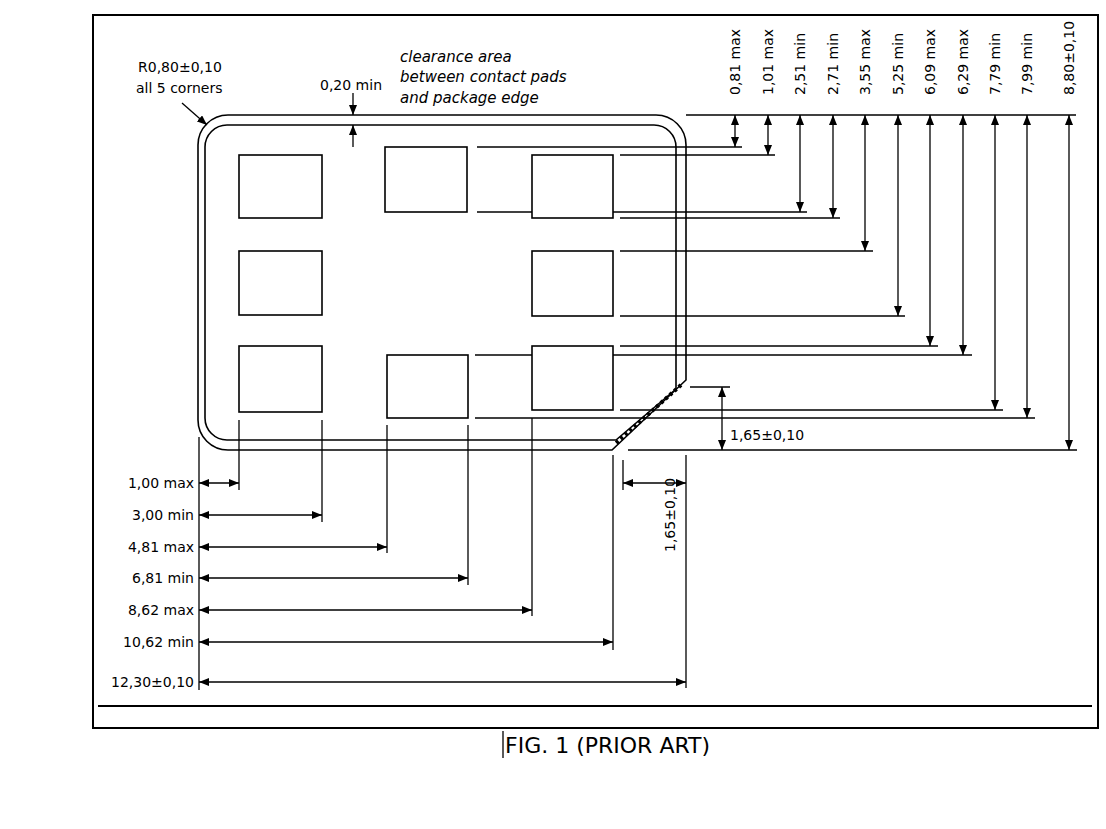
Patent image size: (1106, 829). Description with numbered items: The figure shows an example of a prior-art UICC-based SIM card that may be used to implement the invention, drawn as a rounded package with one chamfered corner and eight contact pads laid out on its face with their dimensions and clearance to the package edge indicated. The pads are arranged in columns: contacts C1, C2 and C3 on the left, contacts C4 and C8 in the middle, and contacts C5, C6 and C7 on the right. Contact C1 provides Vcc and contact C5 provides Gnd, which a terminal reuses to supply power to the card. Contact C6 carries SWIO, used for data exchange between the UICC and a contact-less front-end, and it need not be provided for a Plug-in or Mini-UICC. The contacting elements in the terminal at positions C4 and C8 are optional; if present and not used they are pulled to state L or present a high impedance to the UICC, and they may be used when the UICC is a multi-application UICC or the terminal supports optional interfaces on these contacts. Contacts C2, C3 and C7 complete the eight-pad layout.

The contact C1 (Vcc) C1 is at (280, 186).
The contact C2 is at (280, 283).
The contact C3 is at (280, 379).
The contact C4 is at (426, 179).
The contact C5 (Gnd) C5 is at (572, 186).
The contact C6 (SWIO) C6 is at (572, 283).
The contact C7 is at (572, 378).
The contact C8 is at (427, 386).